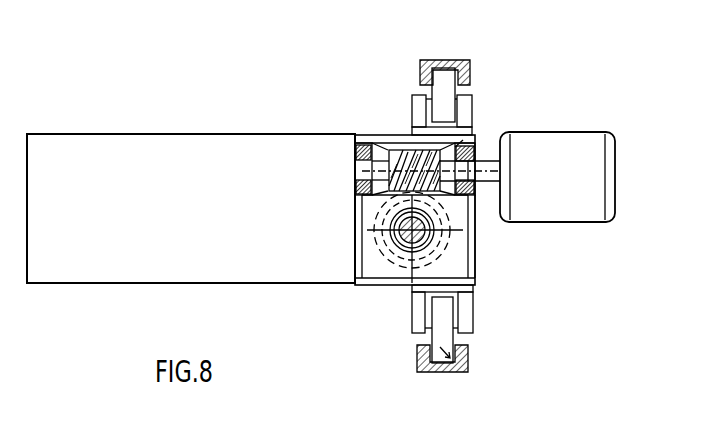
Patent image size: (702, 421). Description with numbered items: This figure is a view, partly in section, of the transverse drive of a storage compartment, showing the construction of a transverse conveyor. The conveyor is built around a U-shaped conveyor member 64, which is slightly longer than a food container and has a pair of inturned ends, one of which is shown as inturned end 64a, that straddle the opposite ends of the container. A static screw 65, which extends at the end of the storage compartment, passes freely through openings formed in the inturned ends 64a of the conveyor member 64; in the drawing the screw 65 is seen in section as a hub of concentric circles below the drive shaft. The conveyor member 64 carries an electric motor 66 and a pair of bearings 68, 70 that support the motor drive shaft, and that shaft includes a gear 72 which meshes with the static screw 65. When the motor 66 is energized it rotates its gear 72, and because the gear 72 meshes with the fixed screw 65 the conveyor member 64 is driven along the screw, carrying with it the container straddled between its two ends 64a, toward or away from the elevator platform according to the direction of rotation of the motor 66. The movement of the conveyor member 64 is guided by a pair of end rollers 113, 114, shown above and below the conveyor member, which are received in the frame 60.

The frame 60 is at (468, 62).
The conveyor member 64 is at (382, 143).
The inturned end 64a is at (466, 249).
The static screw 65 is at (385, 272).
The electric motor 66 is at (567, 137).
The bearing 68 is at (471, 158).
The bearing 70 is at (362, 143).
The gear 72 is at (402, 149).
The end roller 113 is at (460, 372).
The end roller 114 is at (442, 85).